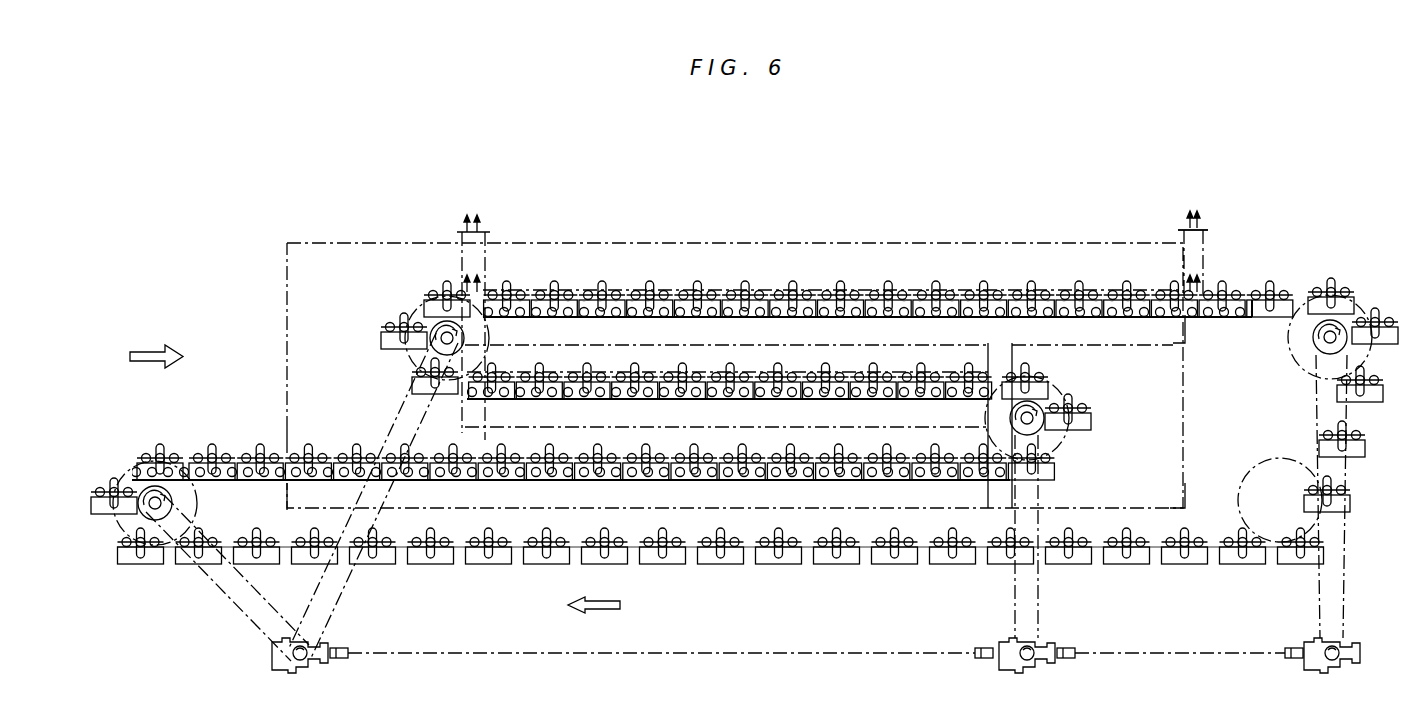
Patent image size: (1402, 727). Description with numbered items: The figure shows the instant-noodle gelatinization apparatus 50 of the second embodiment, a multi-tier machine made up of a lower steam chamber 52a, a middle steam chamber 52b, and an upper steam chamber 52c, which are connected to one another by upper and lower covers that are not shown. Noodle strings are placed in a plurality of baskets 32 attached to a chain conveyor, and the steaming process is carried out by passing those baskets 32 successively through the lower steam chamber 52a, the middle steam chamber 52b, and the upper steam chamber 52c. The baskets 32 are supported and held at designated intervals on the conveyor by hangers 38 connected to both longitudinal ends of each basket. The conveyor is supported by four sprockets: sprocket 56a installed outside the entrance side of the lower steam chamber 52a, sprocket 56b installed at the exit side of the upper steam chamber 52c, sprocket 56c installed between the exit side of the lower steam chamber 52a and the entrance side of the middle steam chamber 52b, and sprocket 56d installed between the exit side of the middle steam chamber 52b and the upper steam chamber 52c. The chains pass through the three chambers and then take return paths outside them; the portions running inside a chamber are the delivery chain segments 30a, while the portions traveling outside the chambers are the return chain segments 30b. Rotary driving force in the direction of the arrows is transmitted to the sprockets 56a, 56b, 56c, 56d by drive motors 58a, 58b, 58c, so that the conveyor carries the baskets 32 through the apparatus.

The gelatinization apparatus 50 is at (700, 226).
The lower steam chamber 52a is at (478, 441).
The middle steam chamber 52b is at (576, 355).
The upper steam chamber 52c is at (858, 267).
The hangers 38 is at (840, 281).
The delivery chain segments 30a is at (958, 290).
The return chain segments 30b is at (692, 547).
The baskets 32 is at (387, 564).
The sprocket 56a is at (125, 525).
The sprocket 56b is at (1362, 306).
The sprocket 56c is at (1055, 440).
The sprocket 56d is at (420, 312).
The drive motor 58a is at (300, 673).
The drive motor 58b is at (1035, 670).
The drive motor 58c is at (1333, 672).